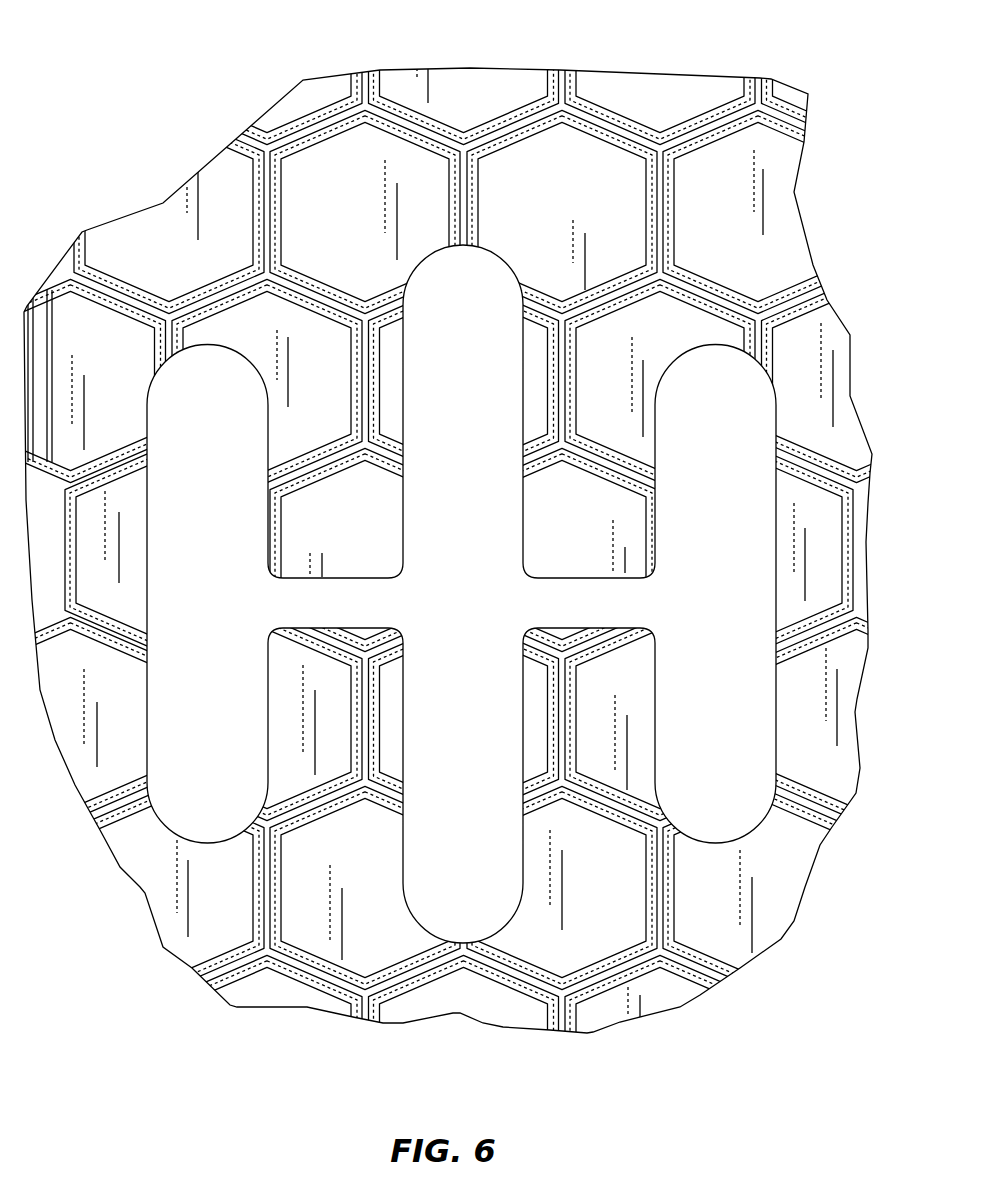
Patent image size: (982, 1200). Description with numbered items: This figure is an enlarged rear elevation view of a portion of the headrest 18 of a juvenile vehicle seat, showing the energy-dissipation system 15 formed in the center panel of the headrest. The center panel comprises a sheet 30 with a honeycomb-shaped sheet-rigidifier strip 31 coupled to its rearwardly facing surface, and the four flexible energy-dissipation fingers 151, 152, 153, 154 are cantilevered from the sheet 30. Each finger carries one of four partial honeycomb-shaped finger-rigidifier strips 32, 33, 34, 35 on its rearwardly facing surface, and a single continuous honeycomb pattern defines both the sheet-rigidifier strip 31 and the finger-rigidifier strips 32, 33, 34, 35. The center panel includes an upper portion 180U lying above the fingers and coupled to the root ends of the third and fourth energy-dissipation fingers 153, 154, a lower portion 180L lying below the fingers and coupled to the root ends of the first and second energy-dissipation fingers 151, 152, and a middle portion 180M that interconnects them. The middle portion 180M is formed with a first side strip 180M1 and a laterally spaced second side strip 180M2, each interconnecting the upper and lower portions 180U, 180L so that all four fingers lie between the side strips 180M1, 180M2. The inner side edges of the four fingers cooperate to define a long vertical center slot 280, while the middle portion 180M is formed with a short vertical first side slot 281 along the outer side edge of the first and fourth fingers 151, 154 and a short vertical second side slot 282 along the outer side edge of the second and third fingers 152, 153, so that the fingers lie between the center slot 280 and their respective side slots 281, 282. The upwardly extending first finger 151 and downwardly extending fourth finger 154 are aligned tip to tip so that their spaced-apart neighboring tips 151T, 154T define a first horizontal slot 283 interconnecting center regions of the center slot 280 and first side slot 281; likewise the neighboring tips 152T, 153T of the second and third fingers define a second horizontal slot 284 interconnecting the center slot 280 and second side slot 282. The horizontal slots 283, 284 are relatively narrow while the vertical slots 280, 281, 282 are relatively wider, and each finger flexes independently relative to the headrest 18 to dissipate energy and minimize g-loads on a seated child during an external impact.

The headrest 18 is at (628, 102).
The energy-dissipation system 15 is at (461, 594).
The sheet 30 is at (141, 262).
The honeycomb-shaped sheet-rigidifier strip 31 is at (314, 148).
The partial honeycomb-shaped finger-rigidifier strip 32 is at (340, 709).
The partial honeycomb-shaped finger-rigidifier strip 33 is at (585, 721).
The partial honeycomb-shaped finger-rigidifier strip 34 is at (582, 402).
The partial honeycomb-shaped finger-rigidifier strip 35 is at (346, 402).
The first energy-dissipation finger 151 is at (470, 620).
The second energy-dissipation finger 152 is at (458, 620).
The third energy-dissipation finger 153 is at (458, 592).
The fourth energy-dissipation finger 154 is at (470, 592).
The first tip 151T is at (300, 615).
The second tip 152T is at (630, 632).
The third tip 153T is at (618, 585).
The fourth tip 154T is at (348, 582).
The upper portion 180U is at (207, 197).
The middle portion 180M is at (126, 421).
The lower portion 180L is at (282, 990).
The first side strip 180M1 is at (140, 555).
The second side strip 180M2 is at (790, 562).
The long vertical center slot 280 is at (446, 877).
The short vertical first side slot 281 is at (203, 812).
The short vertical second side slot 282 is at (716, 812).
The first horizontal slot 283 is at (322, 607).
The second horizontal slot 284 is at (582, 603).